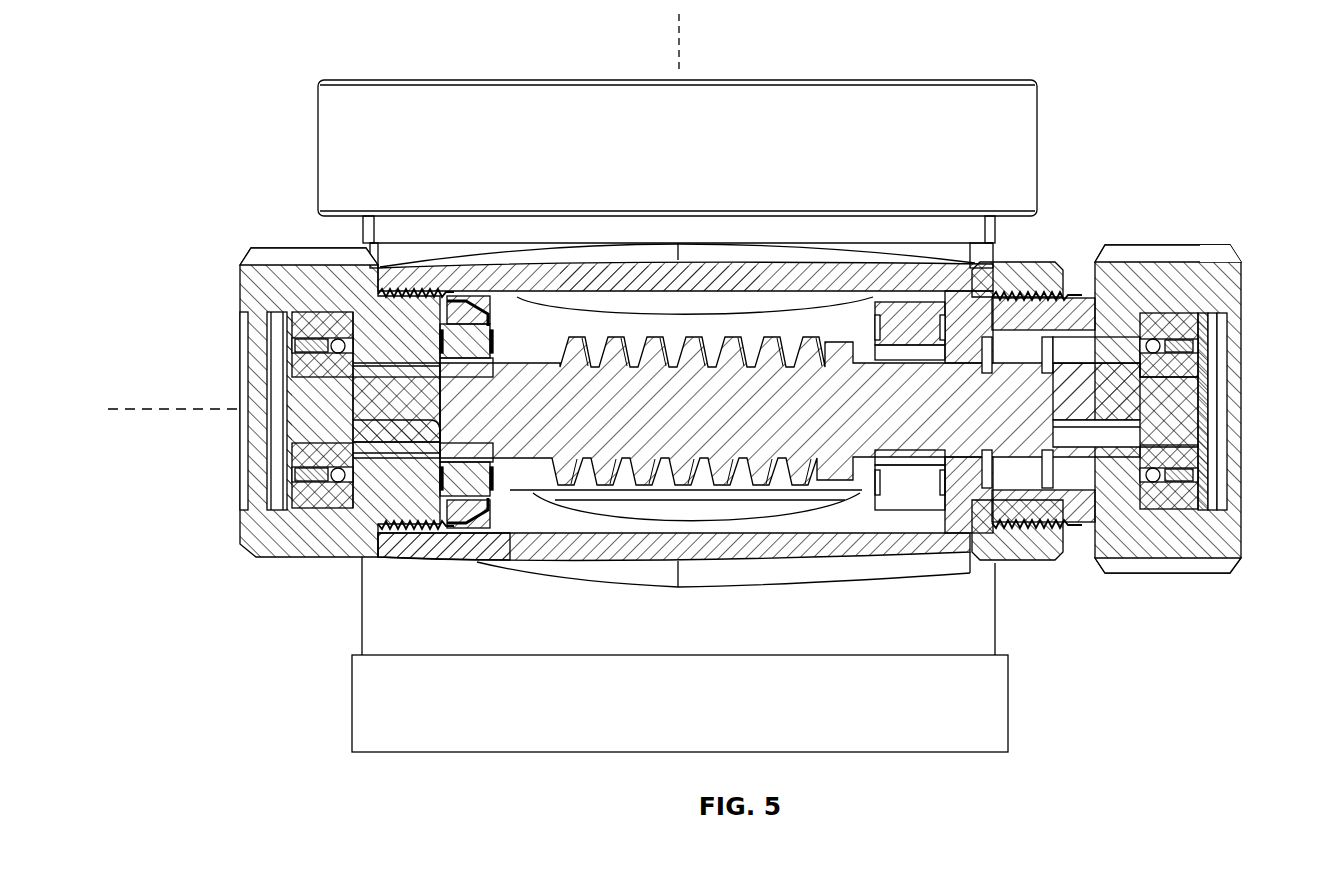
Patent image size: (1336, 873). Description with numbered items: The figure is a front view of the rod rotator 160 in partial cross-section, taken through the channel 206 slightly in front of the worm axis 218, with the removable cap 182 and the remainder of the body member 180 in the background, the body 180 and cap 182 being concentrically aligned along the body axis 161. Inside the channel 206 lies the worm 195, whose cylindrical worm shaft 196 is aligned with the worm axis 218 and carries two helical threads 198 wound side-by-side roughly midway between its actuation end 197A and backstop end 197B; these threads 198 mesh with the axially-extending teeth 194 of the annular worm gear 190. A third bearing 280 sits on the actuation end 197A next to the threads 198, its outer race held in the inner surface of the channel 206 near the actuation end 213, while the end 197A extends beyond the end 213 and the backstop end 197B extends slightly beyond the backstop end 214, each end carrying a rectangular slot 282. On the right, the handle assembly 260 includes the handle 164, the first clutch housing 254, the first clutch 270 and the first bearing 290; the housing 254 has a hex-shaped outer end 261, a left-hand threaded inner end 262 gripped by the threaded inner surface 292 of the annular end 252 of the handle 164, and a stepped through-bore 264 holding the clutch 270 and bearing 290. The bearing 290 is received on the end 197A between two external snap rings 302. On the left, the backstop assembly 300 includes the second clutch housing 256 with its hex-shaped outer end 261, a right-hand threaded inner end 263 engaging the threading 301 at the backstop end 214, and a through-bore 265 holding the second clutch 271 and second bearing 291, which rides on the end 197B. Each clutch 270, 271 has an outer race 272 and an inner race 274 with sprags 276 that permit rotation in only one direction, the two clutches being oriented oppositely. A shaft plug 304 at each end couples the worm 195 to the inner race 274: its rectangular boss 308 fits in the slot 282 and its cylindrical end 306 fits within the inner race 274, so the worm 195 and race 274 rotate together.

The rod rotator 160 is at (216, 72).
The body axis 161 is at (687, 49).
The handle 164 is at (1010, 564).
The body member 180 is at (366, 713).
The removable cap 182 is at (492, 106).
The worm gear 190 is at (752, 330).
The teeth 194 is at (512, 474).
The worm 195 is at (582, 340).
The worm shaft 196 is at (791, 412).
The actuation end 197A is at (910, 481).
The backstop end 197B is at (398, 393).
The helical threads 198 is at (840, 345).
The channel 206 is at (470, 560).
The actuation end 213 is at (813, 562).
The backstop end 214 is at (441, 558).
The worm axis 218 is at (170, 409).
The annular end 252 is at (969, 545).
The first clutch housing 254 is at (1122, 262).
The second clutch housing 256 is at (338, 265).
The handle assembly 260 is at (1201, 196).
The outer end 261 is at (258, 265).
The inner end 262 is at (1062, 291).
The inner end 263 is at (446, 298).
The through-bore 264 is at (1226, 389).
The through-bore 265 is at (255, 352).
The first clutch 270 is at (1172, 327).
The second clutch 271 is at (330, 338).
The outer race 272 is at (1216, 316).
The inner race 274 is at (292, 466).
The sprags 276 is at (308, 492).
The third bearing 280 is at (896, 305).
The rectangular slot 282 is at (400, 416).
The first bearing 290 is at (1047, 330).
The second bearing 291 is at (448, 330).
The inner surface 292 is at (1050, 535).
The backstop assembly 300 is at (278, 183).
The right-hand threading 301 is at (430, 294).
The external snap rings 302 is at (1052, 369).
The shaft plug 304 is at (287, 400).
The cylindrical end 306 is at (290, 423).
The rectangular boss 308 is at (367, 432).